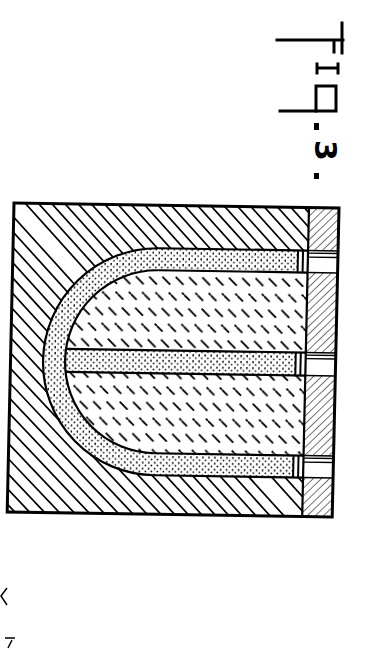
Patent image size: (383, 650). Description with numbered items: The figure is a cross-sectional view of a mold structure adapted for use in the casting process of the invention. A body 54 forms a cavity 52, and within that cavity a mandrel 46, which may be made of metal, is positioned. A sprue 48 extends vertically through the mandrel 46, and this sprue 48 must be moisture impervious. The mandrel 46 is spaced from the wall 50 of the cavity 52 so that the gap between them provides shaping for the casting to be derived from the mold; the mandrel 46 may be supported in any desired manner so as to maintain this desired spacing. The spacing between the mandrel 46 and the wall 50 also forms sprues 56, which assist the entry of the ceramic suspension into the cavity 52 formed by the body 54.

The mandrel 46 is at (213, 271).
The sprue 48 is at (305, 362).
The wall 50 is at (220, 468).
The cavity 52 is at (157, 463).
The body 54 is at (113, 493).
The sprues 56 is at (309, 258).